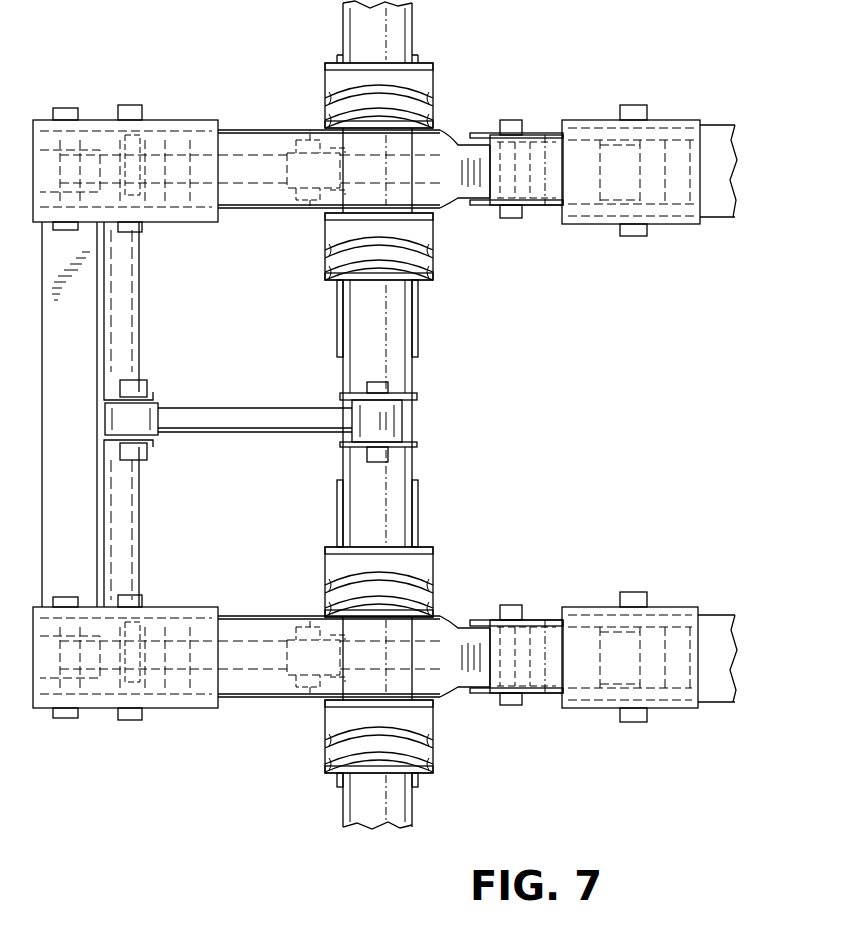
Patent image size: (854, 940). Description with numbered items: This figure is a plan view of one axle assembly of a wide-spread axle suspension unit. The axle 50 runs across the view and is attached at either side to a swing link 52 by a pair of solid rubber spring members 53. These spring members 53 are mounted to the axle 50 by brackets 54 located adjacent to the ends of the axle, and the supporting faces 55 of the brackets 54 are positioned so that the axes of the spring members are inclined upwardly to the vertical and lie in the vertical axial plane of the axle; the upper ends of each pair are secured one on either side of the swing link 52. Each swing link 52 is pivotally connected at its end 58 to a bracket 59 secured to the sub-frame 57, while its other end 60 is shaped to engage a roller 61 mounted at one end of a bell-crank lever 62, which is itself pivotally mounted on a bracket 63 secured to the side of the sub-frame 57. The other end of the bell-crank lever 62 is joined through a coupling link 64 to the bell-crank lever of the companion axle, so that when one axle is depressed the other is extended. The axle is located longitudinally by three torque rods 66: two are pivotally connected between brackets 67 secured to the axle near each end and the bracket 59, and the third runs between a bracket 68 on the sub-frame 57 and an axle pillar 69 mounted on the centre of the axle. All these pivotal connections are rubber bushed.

The axle 50 is at (355, 805).
The swing link 52 is at (455, 148).
The solid rubber spring member 53 is at (325, 90).
The bracket 54 is at (418, 60).
The supporting face 55 is at (325, 66).
The sub-frame 57 is at (90, 414).
The end of swing link 58 is at (140, 140).
The bracket 59 is at (196, 120).
The other end of swing link 60 is at (552, 208).
The roller 61 is at (478, 206).
The bell-crank lever 62 is at (532, 208).
The bracket 63 is at (688, 222).
The coupling link 64 is at (706, 125).
The torque rod 66 is at (235, 190).
The bracket 67 is at (355, 150).
The bracket 68 is at (153, 395).
The axle pillar 69 is at (420, 396).